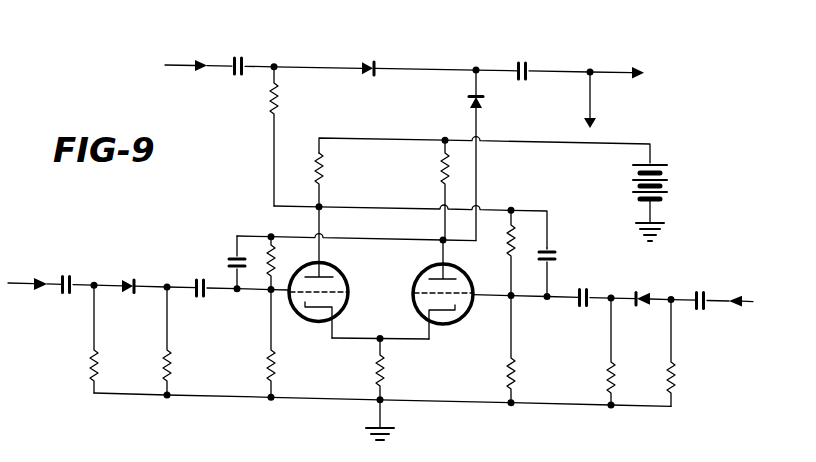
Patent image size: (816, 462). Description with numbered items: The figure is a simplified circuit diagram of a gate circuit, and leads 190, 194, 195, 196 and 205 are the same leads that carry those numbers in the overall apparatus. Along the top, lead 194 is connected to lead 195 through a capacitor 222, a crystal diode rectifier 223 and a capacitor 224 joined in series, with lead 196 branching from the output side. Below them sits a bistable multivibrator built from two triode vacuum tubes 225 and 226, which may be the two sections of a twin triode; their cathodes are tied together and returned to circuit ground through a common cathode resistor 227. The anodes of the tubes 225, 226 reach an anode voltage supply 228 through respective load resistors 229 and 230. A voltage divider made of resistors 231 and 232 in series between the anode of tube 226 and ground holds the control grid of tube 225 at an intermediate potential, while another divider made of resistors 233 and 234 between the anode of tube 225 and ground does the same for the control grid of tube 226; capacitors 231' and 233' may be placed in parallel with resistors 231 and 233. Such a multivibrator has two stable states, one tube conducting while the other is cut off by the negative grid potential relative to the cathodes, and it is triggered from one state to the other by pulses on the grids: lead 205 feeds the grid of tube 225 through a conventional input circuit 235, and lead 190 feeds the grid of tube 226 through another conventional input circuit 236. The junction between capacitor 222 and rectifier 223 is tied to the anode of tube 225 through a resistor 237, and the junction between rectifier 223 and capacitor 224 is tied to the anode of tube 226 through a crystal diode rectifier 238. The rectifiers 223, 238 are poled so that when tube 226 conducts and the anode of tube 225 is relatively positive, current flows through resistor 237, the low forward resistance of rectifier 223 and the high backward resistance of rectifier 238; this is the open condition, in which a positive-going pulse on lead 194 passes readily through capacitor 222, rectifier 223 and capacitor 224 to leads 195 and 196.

The lead 190 is at (719, 297).
The lead 194 is at (178, 62).
The lead 195 is at (612, 70).
The lead 196 is at (588, 101).
The lead 205 is at (22, 280).
The capacitor 222 is at (239, 56).
The crystal diode rectifier 223 is at (368, 64).
The capacitor 224 is at (521, 60).
The triode vacuum tube 225 is at (306, 320).
The triode vacuum tube 226 is at (414, 307).
The common cathode resistor 227 is at (373, 374).
The anode voltage supply 228 is at (632, 185).
The load resistor 229 is at (324, 170).
The load resistor 230 is at (442, 173).
The resistor 231 is at (290, 263).
The capacitor 231' is at (216, 262).
The resistor 232 is at (268, 360).
The resistor 233 is at (491, 252).
The capacitor 233' is at (569, 267).
The resistor 234 is at (516, 380).
The input circuit 235 is at (132, 353).
The input circuit 236 is at (640, 357).
The resistor 237 is at (266, 101).
The crystal diode rectifier 238 is at (470, 107).